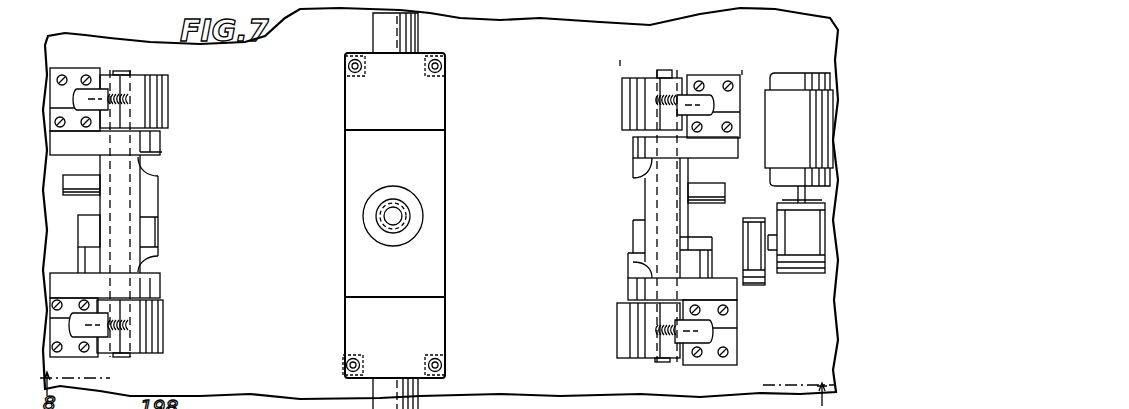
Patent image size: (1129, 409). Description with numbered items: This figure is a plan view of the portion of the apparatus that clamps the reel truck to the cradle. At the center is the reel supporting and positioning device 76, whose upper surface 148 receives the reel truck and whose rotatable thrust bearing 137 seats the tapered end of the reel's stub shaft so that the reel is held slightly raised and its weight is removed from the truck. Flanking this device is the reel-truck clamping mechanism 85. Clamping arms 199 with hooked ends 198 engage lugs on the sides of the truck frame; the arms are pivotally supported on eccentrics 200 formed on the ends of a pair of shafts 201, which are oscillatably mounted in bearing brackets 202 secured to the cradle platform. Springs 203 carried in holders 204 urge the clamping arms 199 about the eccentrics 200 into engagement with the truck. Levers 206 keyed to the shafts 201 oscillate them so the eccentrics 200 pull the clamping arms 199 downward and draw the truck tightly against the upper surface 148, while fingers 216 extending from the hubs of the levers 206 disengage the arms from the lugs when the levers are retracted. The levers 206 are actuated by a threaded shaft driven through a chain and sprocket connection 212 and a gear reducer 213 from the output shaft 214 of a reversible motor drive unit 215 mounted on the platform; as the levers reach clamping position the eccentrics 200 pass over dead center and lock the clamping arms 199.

The reel supporting and positioning device 76 is at (401, 211).
The reel-truck clamping mechanism 85 is at (751, 55).
The rotatable thrust bearing 137 is at (408, 225).
The upper surface 148 is at (360, 115).
The hooked ends 198 is at (168, 118).
The clamping arms 199 is at (142, 94).
The eccentrics 200 is at (118, 358).
The shafts 201 is at (150, 205).
The bearing brackets 202 is at (128, 146).
The springs 203 is at (130, 92).
The holders 204 is at (89, 91).
The levers 206 is at (98, 233).
The chain and sprocket connection 212 is at (758, 286).
The gear reducer 213 is at (795, 274).
The output shaft 214 is at (797, 194).
The reversible motor drive unit 215 is at (799, 129).
The fingers 216 is at (157, 145).